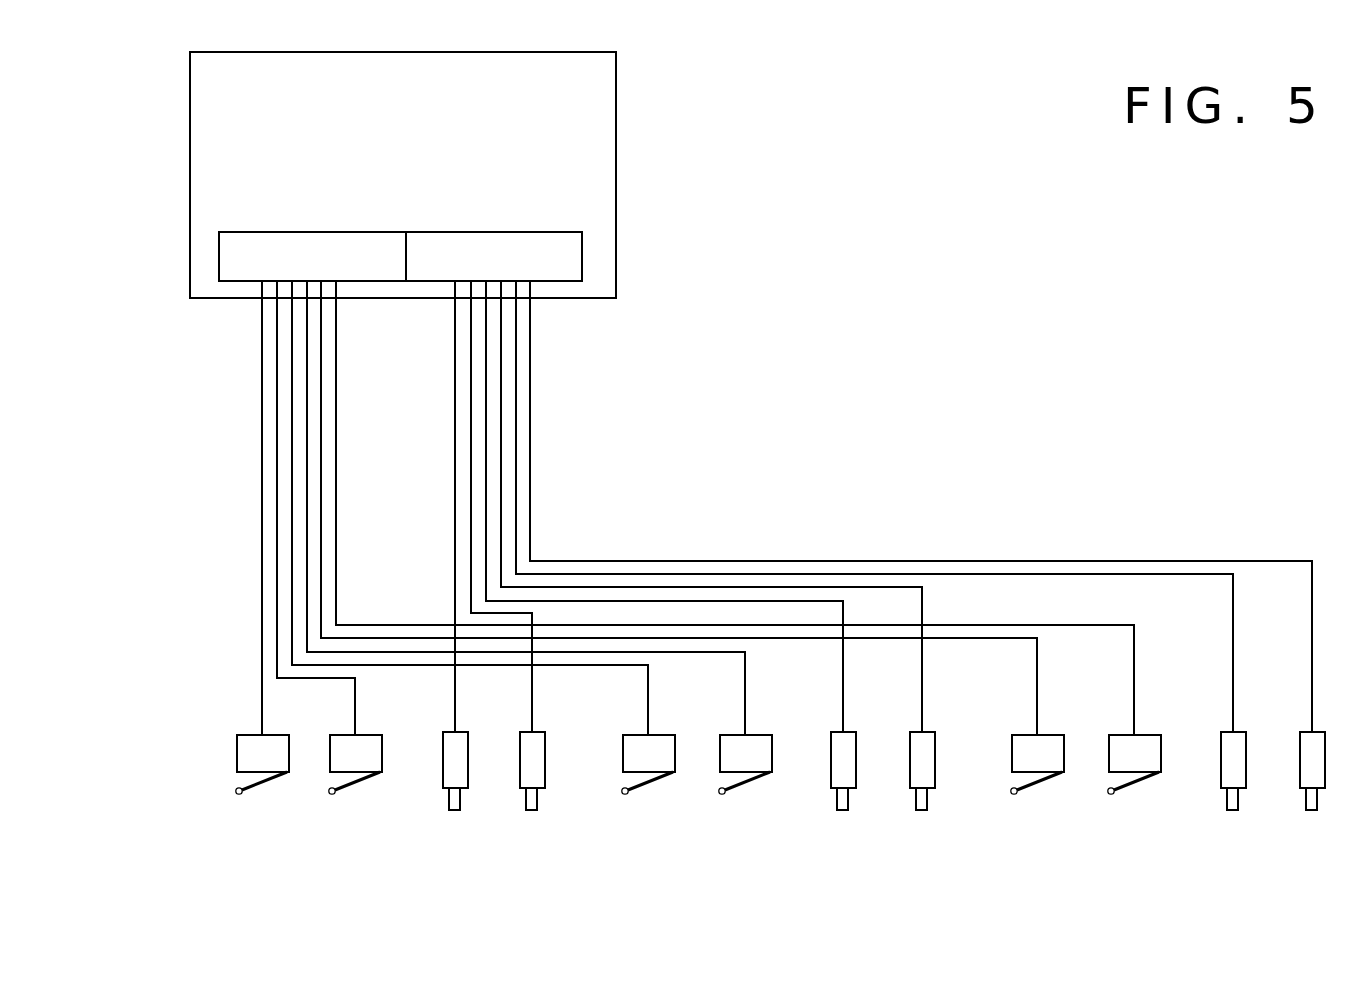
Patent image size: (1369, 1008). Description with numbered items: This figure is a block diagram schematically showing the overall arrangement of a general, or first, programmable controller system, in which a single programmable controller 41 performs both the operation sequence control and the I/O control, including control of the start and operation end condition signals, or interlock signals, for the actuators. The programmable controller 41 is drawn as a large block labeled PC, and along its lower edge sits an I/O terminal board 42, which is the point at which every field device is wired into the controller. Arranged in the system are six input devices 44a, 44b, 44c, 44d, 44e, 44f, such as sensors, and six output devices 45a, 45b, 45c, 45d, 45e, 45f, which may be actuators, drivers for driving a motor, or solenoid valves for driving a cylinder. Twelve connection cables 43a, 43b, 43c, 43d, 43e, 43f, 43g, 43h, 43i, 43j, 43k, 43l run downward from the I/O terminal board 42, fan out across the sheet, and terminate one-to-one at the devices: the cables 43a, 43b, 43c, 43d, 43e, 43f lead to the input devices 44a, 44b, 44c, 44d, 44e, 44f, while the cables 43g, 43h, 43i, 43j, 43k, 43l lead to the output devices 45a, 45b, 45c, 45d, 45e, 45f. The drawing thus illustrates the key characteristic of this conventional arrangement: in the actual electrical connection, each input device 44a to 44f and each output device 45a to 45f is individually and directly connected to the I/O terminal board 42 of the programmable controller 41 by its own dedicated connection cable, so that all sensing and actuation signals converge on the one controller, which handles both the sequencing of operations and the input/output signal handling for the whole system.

The programmable controller 41 is at (616, 145).
The I/O terminal board 42 is at (582, 256).
The connection cable 43a is at (262, 345).
The connection cable 43b is at (277, 379).
The connection cable 43c is at (292, 416).
The connection cable 43d is at (307, 451).
The connection cable 43e is at (321, 487).
The connection cable 43f is at (336, 522).
The connection cable 43g is at (455, 345).
The connection cable 43h is at (471, 379).
The connection cable 43i is at (486, 416).
The connection cable 43j is at (501, 451).
The connection cable 43k is at (516, 487).
The connection cable 43l is at (530, 522).
The input device 44a is at (262, 811).
The input device 44b is at (355, 811).
The input device 44c is at (648, 811).
The input device 44d is at (745, 811).
The input device 44e is at (1037, 811).
The input device 44f is at (1134, 811).
The output device 45a is at (455, 809).
The output device 45b is at (532, 809).
The output device 45c is at (842, 809).
The output device 45d is at (922, 809).
The output device 45e is at (1233, 809).
The output device 45f is at (1309, 809).